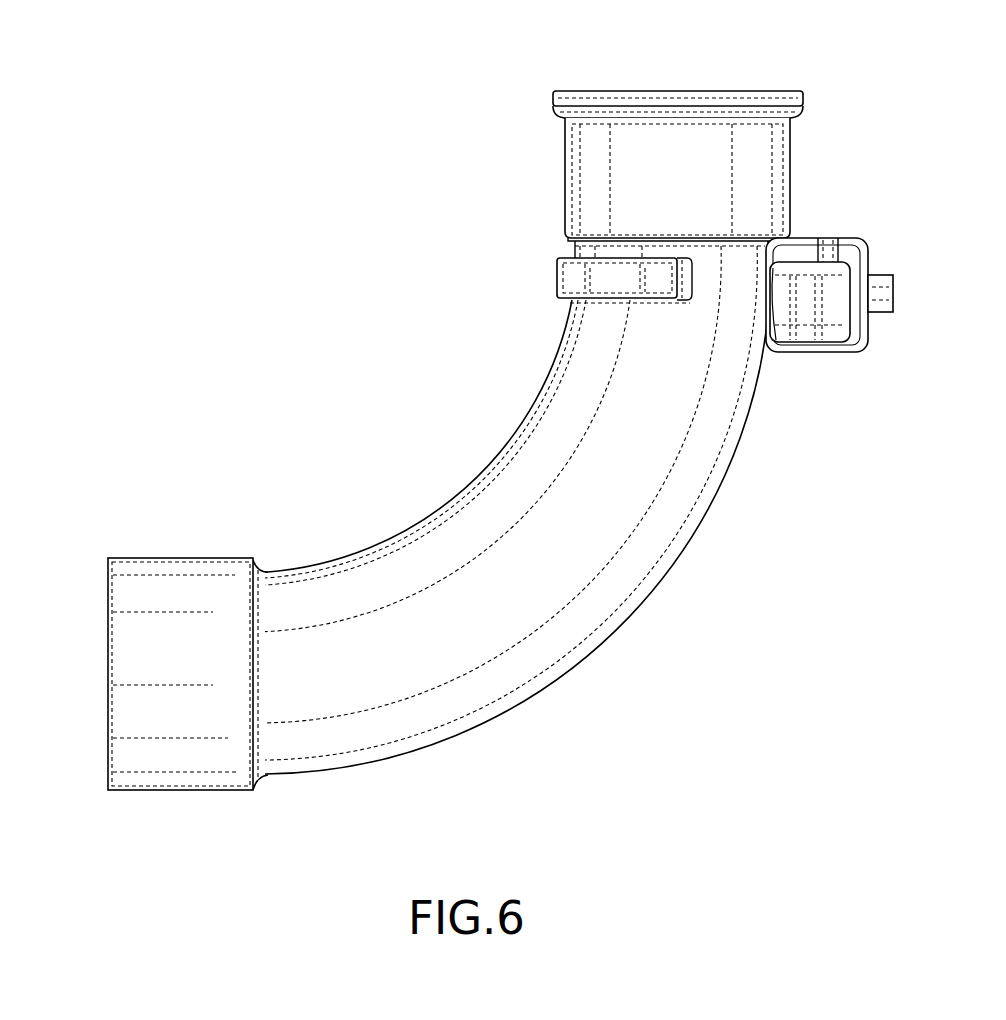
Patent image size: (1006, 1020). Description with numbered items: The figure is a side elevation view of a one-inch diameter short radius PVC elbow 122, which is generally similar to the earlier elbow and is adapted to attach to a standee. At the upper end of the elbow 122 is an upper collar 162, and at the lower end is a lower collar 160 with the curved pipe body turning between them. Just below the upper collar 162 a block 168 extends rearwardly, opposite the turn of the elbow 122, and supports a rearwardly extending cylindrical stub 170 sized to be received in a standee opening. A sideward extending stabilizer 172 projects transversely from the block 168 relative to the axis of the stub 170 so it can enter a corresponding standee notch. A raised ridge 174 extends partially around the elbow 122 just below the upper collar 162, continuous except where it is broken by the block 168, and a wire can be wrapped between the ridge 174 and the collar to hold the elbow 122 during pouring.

The elbow 122 is at (682, 555).
The lower collar 160 is at (215, 572).
The upper collar 162 is at (775, 178).
The block 168 is at (818, 357).
The stub 170 is at (893, 296).
The stabilizer 172 is at (826, 248).
The ridge 174 is at (570, 282).